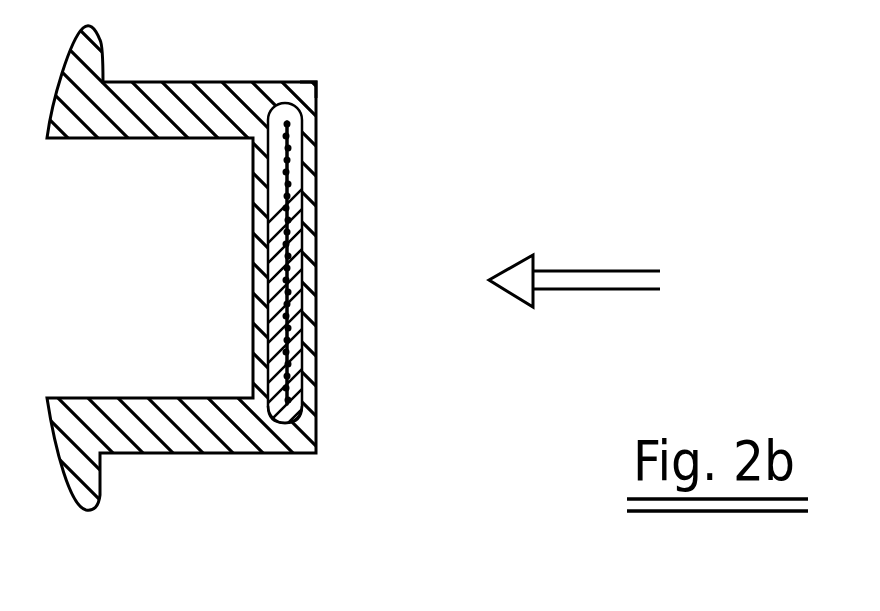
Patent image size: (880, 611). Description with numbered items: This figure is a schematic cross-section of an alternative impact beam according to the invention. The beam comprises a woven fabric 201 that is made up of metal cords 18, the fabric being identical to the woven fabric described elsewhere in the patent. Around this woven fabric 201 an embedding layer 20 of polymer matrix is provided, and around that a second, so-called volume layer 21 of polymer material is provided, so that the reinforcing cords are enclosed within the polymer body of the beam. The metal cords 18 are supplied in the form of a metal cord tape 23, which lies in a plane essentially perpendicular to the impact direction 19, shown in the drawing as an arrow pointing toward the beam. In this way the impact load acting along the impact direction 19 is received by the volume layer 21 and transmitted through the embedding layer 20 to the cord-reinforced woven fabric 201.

The volume layer 21 is at (140, 98).
The metal cord tape 23 is at (298, 92).
The metal cord 18 is at (292, 142).
The woven fabric 201 is at (289, 223).
The embedding layer 20 is at (293, 407).
The impact direction 19 is at (613, 284).